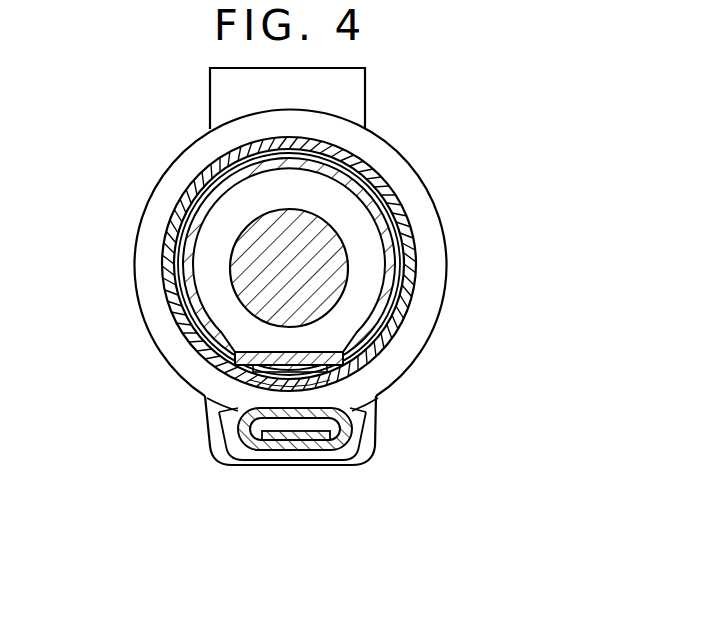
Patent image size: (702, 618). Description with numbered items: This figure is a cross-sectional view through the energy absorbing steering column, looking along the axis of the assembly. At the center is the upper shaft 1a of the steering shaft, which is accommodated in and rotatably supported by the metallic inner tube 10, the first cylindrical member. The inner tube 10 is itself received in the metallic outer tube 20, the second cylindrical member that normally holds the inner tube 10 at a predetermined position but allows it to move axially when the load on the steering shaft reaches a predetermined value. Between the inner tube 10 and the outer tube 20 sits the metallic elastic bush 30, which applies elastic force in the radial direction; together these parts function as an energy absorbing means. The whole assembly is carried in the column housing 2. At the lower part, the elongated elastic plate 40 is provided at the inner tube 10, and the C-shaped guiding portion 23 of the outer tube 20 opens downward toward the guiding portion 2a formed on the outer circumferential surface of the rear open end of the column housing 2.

The column housing 2 is at (170, 174).
The guiding portion 2a is at (291, 456).
The metallic elastic bush 30 is at (347, 152).
The outer tube 20 is at (408, 233).
The inner tube 10 is at (207, 335).
The upper shaft 1a is at (315, 290).
The plate 40 is at (326, 385).
The guiding portion 23 is at (245, 421).